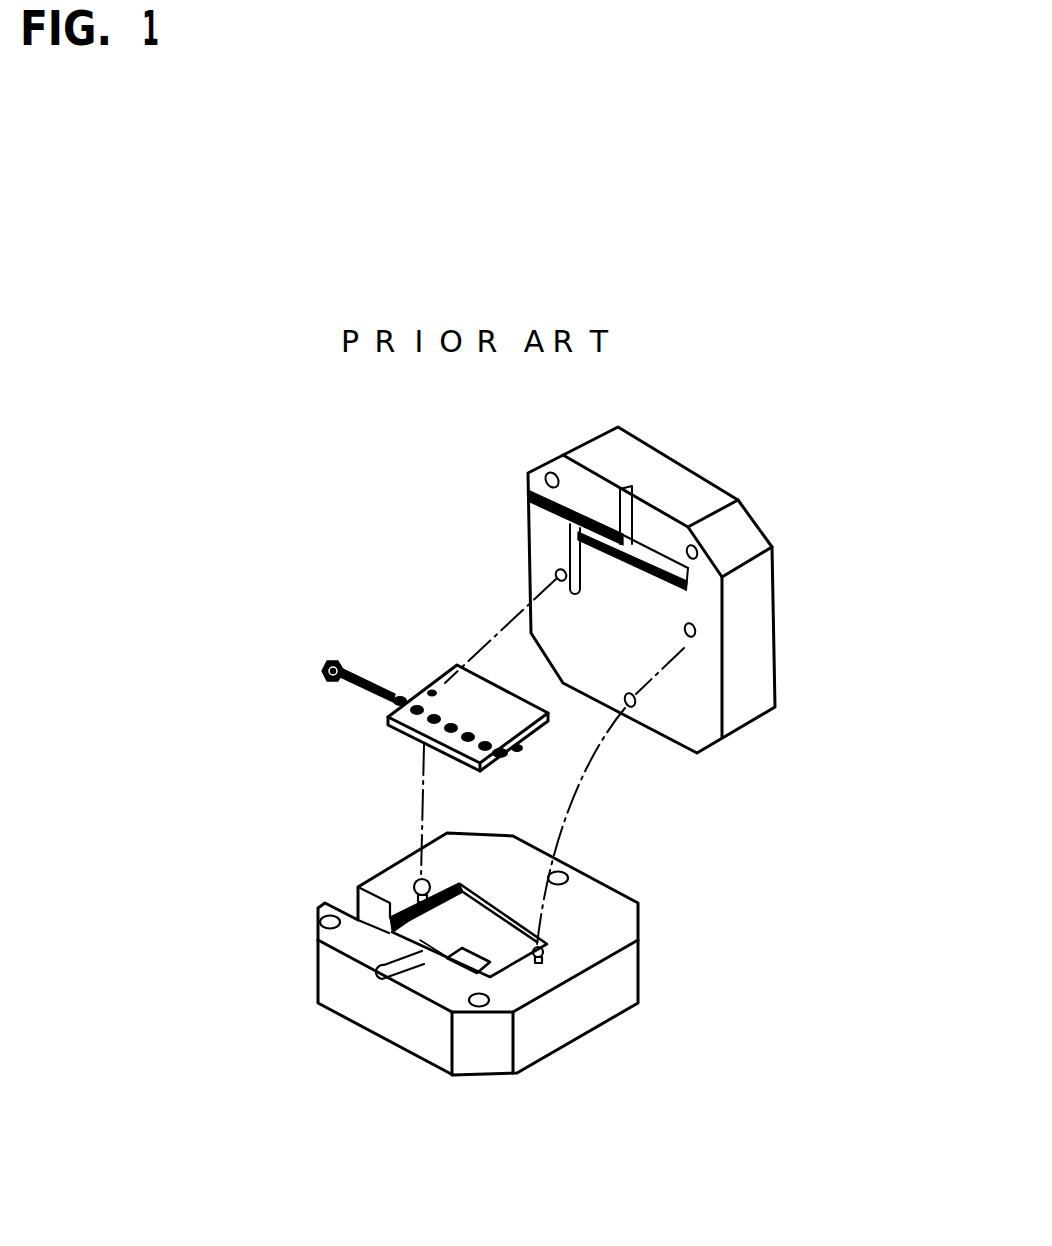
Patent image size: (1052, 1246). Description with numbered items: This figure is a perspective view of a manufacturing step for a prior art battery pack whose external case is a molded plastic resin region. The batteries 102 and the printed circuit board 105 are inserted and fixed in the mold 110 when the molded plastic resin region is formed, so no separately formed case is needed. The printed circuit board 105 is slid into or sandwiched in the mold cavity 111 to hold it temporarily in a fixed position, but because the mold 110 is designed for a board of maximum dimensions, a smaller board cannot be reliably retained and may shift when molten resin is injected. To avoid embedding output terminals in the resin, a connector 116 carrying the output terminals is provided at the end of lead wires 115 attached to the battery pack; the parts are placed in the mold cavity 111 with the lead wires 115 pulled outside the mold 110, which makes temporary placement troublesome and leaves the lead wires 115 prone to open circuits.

The batteries 102 is at (453, 682).
The printed circuit board 105 is at (422, 688).
The mold 110 is at (758, 627).
The mold cavity 111 is at (622, 560).
The lead wires 115 is at (366, 688).
The connector 116 is at (322, 678).